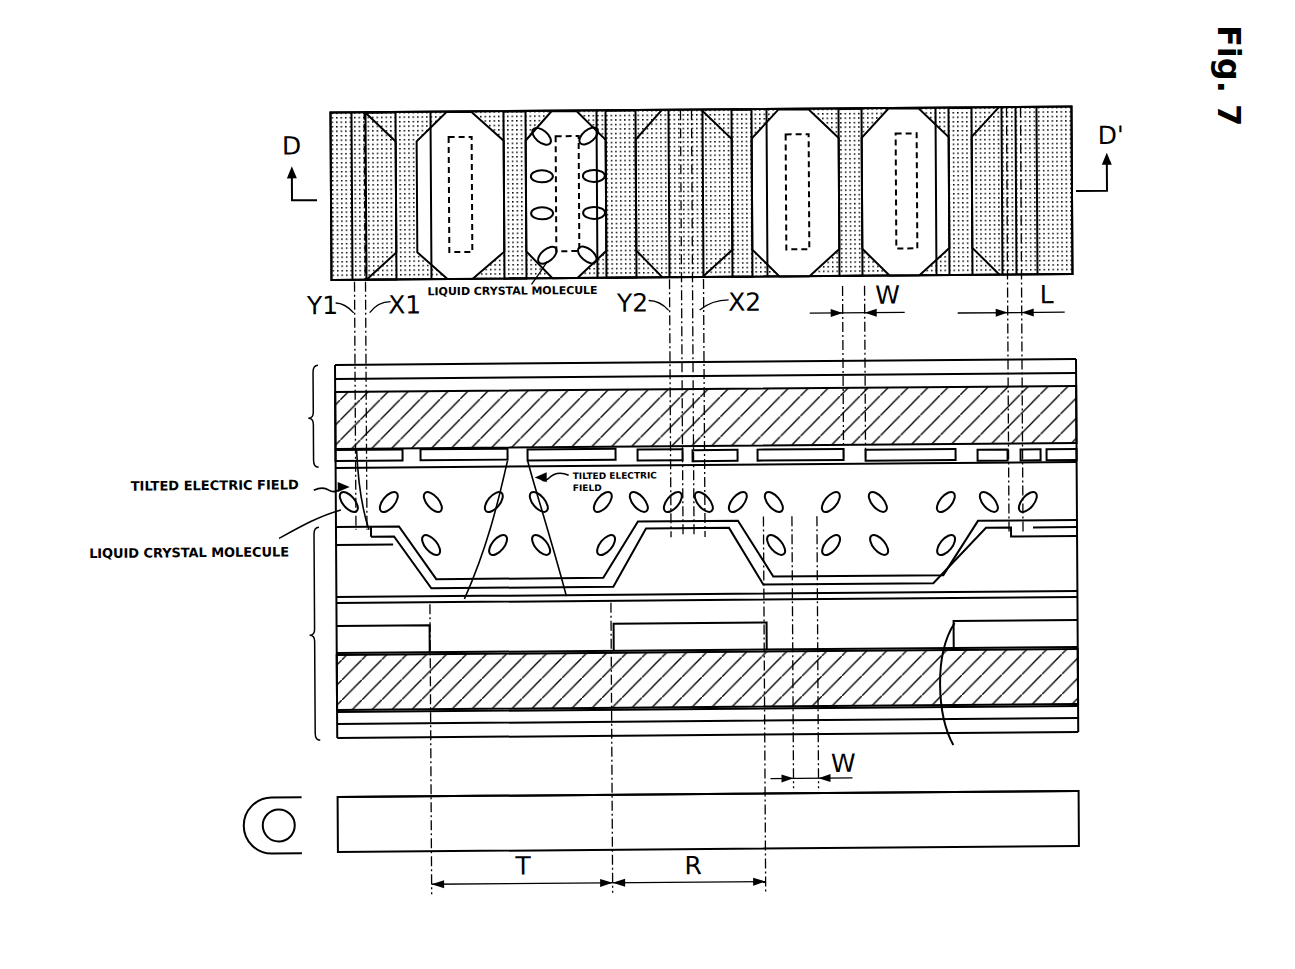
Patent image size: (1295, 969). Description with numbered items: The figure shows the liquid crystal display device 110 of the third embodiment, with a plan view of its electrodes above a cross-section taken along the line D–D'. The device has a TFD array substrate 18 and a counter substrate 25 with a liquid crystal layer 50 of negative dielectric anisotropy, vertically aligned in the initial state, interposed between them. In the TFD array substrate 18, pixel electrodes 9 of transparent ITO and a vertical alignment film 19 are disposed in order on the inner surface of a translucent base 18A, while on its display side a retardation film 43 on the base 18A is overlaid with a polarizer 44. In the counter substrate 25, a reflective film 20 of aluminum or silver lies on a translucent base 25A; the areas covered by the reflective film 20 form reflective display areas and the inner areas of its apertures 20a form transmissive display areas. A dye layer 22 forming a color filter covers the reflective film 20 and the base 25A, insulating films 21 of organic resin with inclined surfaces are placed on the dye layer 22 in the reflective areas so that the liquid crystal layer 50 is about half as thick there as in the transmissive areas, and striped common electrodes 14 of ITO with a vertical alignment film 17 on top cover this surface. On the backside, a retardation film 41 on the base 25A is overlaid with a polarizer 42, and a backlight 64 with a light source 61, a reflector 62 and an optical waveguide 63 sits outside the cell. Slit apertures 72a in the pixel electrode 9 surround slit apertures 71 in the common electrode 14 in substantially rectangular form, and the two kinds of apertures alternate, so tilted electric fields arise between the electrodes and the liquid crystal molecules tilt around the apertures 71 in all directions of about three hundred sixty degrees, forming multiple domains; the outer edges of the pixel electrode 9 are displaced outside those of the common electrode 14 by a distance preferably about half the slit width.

The reflective film 20 is at (1055, 133).
The slit aperture of the pixel electrode 72a is at (403, 137).
The slit aperture of the common electrode 71 is at (468, 150).
The liquid crystal display device 110 is at (1082, 306).
The polarizer 44 is at (1077, 366).
The retardation film 43 is at (1077, 380).
The base 18A is at (1077, 412).
The pixel electrode 9 is at (1077, 462).
The vertical alignment film 19 is at (1077, 473).
The liquid crystal layer 50 is at (1077, 494).
The vertical alignment film 17 is at (1077, 528).
The common electrode 14 is at (1003, 542).
The insulating film 21 is at (1077, 588).
The dye layer 22 is at (1077, 611).
The aperture of the reflective film 20a is at (950, 700).
The base 25A is at (1077, 678).
The retardation film 41 is at (1077, 718).
The polarizer 42 is at (1077, 732).
The TFD array substrate 18 is at (294, 416).
The counter substrate 25 is at (295, 633).
The optical waveguide 63 is at (1077, 848).
The backlight 64 is at (1082, 816).
The light source 61 is at (278, 822).
The reflector 62 is at (242, 834).